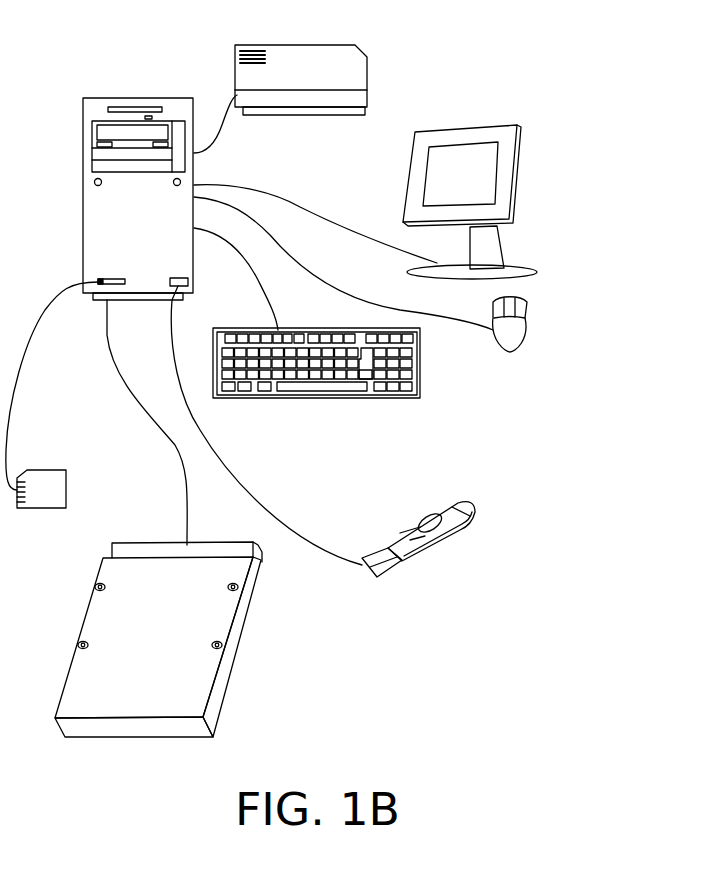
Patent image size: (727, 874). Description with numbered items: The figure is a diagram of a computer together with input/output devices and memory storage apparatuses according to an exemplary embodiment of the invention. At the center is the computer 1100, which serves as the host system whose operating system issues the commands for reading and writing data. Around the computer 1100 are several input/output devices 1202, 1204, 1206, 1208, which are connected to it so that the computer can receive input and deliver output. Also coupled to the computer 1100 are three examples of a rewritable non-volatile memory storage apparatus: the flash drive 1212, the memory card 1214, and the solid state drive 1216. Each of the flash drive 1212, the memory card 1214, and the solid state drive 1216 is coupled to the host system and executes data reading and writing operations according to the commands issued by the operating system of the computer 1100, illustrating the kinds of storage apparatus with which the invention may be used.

The computer host 1100 is at (141, 97).
The mouse 1202 is at (527, 330).
The keyboard 1204 is at (420, 373).
The monitor 1206 is at (473, 125).
The printer 1208 is at (297, 45).
The flash drive 1212 is at (413, 525).
The memory card 1214 is at (67, 478).
The solid state drive (SSD) 1216 is at (208, 533).